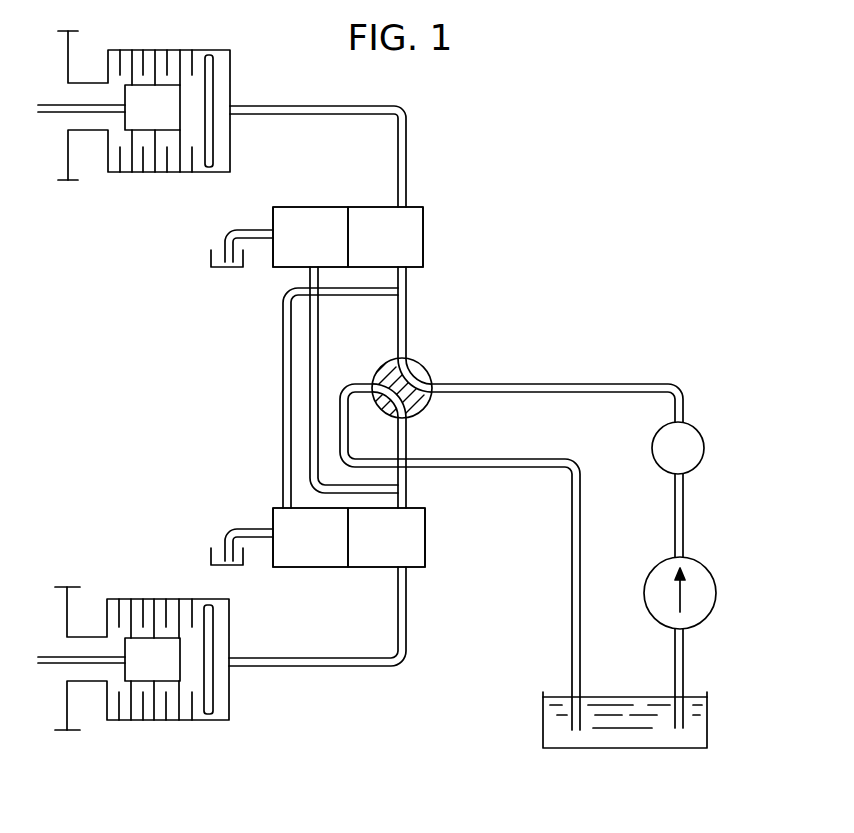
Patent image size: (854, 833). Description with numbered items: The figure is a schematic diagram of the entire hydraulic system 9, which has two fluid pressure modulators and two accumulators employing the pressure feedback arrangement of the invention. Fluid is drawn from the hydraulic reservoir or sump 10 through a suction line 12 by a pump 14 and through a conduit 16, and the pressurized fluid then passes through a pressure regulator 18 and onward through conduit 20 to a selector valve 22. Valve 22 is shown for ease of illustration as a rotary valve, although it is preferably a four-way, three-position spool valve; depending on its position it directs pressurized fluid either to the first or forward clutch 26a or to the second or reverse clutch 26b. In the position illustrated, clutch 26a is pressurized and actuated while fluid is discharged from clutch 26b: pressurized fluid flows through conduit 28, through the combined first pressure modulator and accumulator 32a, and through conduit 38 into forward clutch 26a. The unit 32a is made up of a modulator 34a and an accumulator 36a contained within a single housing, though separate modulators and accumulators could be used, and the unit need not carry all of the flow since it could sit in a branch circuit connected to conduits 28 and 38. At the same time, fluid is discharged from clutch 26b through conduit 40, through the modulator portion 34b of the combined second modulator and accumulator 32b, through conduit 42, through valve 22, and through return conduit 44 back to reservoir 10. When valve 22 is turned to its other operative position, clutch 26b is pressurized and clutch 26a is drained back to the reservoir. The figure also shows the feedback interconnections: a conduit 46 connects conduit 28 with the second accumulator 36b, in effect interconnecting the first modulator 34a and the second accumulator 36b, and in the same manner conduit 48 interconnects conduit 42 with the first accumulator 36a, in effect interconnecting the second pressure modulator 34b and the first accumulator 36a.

The hydraulic system 9 is at (488, 250).
The hydraulic reservoir 10 is at (700, 722).
The suction conduit 12 is at (682, 667).
The pump 14 is at (700, 580).
The conduit 16 is at (682, 513).
The pressure regulator 18 is at (697, 440).
The conduit 20 is at (563, 385).
The selector valve 22 is at (418, 362).
The forward clutch 26a is at (133, 177).
The reverse clutch 26b is at (138, 585).
The conduit 28 is at (402, 318).
The combined first pressure modulator and accumulator 32a is at (348, 200).
The combined second modulator and accumulator 32b is at (349, 568).
The first modulator 34a is at (402, 251).
The second pressure modulator 34b is at (346, 575).
The first accumulator 36a is at (324, 251).
The second accumulator 36b is at (324, 552).
The conduit 38 is at (278, 115).
The conduit 40 is at (278, 655).
The conduit 42 is at (402, 435).
The return conduit 44 is at (343, 427).
The conduit 46 is at (337, 293).
The conduit 48 is at (318, 342).